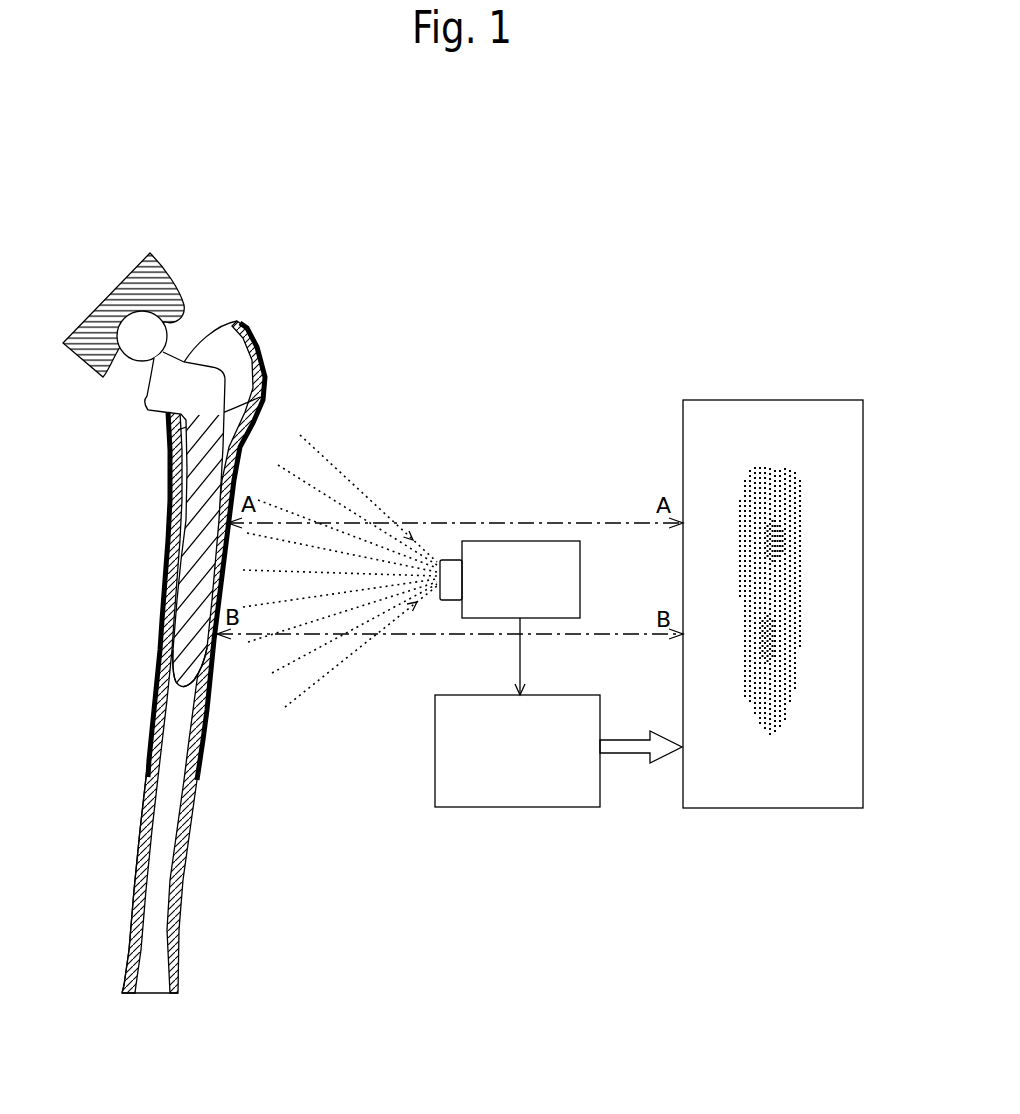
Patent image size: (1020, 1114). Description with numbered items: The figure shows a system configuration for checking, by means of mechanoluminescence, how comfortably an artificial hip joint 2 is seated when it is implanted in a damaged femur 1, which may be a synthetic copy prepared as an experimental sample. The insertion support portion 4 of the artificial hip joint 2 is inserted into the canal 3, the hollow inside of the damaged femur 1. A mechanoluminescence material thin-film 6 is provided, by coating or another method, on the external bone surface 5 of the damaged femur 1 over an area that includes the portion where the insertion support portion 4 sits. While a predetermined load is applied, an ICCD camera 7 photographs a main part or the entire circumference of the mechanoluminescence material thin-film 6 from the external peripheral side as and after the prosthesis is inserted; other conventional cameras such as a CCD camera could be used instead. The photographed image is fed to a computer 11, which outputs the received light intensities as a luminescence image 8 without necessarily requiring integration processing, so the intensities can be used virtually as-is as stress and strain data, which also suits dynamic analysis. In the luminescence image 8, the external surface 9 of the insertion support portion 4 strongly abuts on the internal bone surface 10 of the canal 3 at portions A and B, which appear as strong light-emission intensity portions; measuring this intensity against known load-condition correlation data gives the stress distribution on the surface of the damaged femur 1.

The damaged femur 1 is at (275, 350).
The artificial hip joint 2 is at (186, 480).
The canal 3 is at (247, 377).
The insertion support portion 4 is at (197, 550).
The external bone surface 5 is at (190, 807).
The mechanoluminescence material thin-film 6 is at (237, 475).
The ICCD camera 7 is at (577, 548).
The luminescence image 8 is at (738, 463).
The external surface 9 is at (260, 400).
The internal bone surface 10 is at (207, 680).
The computer 11 is at (597, 707).